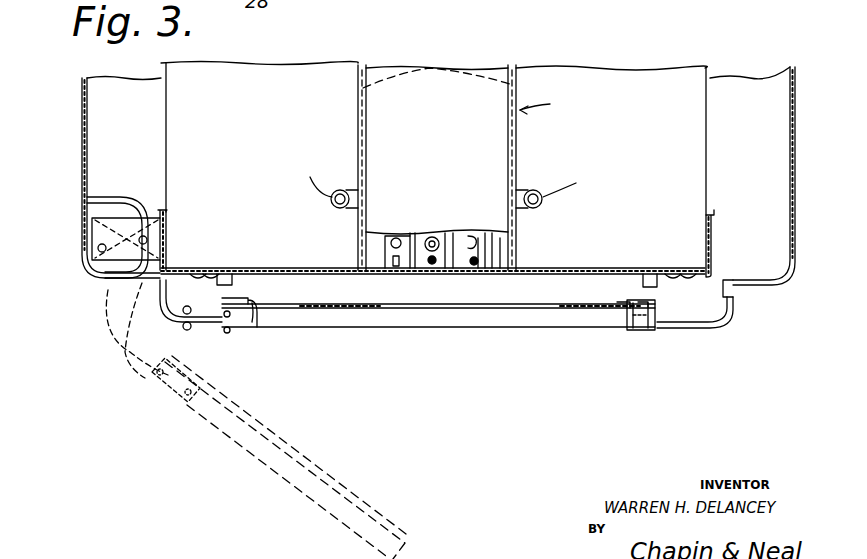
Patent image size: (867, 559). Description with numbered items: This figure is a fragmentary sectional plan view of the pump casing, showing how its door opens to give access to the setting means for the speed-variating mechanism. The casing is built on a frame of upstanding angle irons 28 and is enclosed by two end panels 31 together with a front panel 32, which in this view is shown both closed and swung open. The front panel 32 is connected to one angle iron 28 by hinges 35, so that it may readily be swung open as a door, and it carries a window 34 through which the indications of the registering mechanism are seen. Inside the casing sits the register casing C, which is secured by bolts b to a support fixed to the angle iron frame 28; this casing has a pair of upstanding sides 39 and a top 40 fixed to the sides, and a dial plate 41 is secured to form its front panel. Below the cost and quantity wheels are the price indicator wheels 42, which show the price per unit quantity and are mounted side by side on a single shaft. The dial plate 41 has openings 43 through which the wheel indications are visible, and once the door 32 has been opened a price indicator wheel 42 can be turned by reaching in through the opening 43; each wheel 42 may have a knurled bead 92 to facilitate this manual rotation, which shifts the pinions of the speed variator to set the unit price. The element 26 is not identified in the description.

The top wall 26 is at (434, 35).
The angle iron 28 is at (167, 213).
The end panel 31 is at (84, 148).
The front panel 32 is at (660, 330).
The window 34 is at (556, 308).
The hinge 35 is at (108, 197).
The upstanding side 39 is at (440, 70).
The top 40 is at (445, 167).
The dial plate 41 is at (270, 268).
The price indicator wheel 42 is at (385, 253).
The opening 43 is at (398, 273).
The knurled bead 92 is at (490, 272).